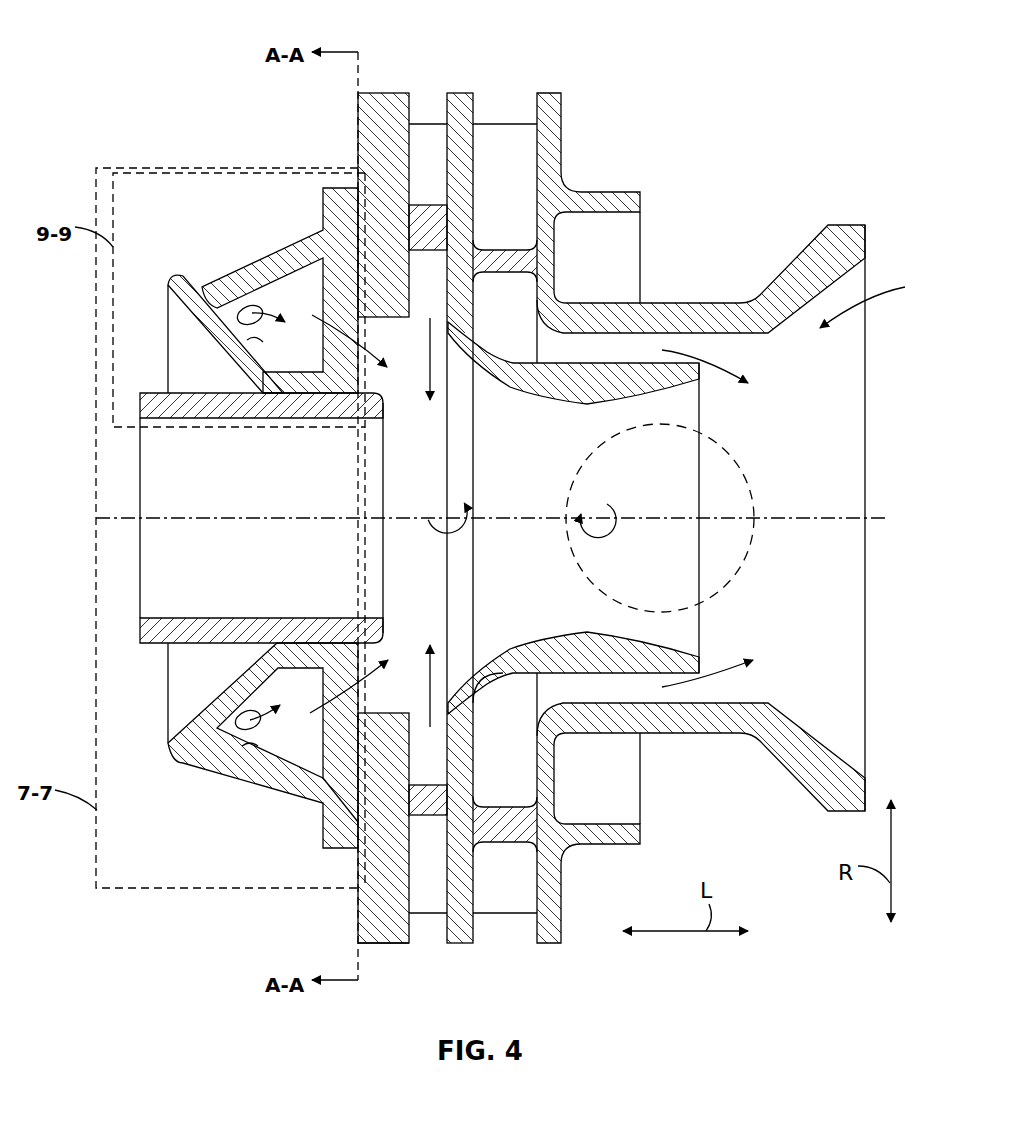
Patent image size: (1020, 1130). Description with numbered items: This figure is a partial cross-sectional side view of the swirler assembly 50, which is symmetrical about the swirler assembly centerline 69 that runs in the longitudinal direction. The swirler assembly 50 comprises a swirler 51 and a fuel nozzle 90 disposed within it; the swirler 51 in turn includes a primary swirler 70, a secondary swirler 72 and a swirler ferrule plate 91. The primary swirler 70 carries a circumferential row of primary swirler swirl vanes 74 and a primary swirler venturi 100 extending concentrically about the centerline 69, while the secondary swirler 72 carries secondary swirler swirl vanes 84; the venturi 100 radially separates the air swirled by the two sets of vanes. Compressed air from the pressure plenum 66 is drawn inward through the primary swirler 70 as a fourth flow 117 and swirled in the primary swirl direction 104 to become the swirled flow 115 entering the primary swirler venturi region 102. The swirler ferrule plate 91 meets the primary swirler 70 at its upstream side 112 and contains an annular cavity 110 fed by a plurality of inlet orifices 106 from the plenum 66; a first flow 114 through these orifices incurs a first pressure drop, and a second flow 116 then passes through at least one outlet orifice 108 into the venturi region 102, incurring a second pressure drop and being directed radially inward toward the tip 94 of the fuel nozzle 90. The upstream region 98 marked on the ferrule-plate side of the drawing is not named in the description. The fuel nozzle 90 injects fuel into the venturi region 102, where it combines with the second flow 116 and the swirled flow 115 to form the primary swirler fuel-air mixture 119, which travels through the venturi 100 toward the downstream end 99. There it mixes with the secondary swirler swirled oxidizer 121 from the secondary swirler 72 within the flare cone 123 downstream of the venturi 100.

The swirler assembly 50 is at (228, 60).
The swirler 51 is at (632, 192).
The pressure plenum 66 is at (190, 154).
The swirler assembly centerline 69 is at (126, 522).
The primary swirler 70 is at (358, 130).
The secondary swirler 72 is at (552, 100).
The primary swirler swirl vanes 74 is at (440, 135).
The secondary swirler swirl vanes 84 is at (520, 155).
The fuel nozzle 90 is at (152, 645).
The swirler ferrule plate 91 is at (265, 790).
The tip of the fuel nozzle 94 is at (400, 617).
The inlet region 98 is at (88, 505).
The downstream end of the swirler assembly 99 is at (900, 434).
The primary swirler venturi 100 is at (633, 398).
The primary swirler venturi region 102 is at (503, 494).
The primary swirl direction 104 is at (615, 532).
The inlet orifices 106 is at (223, 313).
The outlet orifice 108 is at (328, 343).
The annular cavity 110 is at (310, 280).
The upstream side of the primary swirler 112 is at (357, 828).
The first flow of oxidizer 114 is at (237, 292).
The swirled flow of oxidizer 115 is at (470, 533).
The second flow of oxidizer 116 is at (371, 345).
The fourth flow of the oxidizer 117 is at (413, 947).
The primary swirler fuel-air mixture 119 is at (700, 607).
The secondary swirler swirled oxidizer 121 is at (683, 352).
The flare cone 123 is at (881, 294).